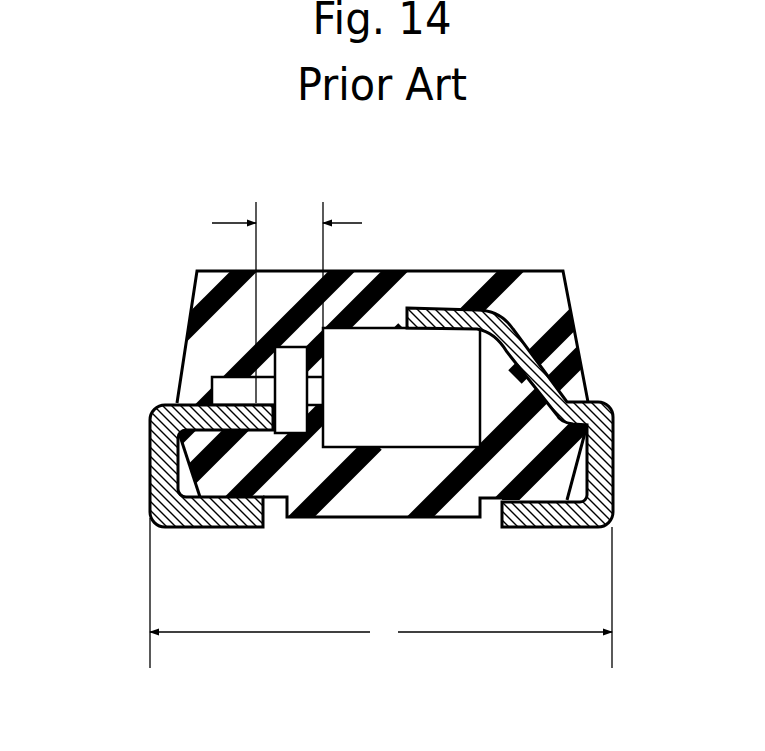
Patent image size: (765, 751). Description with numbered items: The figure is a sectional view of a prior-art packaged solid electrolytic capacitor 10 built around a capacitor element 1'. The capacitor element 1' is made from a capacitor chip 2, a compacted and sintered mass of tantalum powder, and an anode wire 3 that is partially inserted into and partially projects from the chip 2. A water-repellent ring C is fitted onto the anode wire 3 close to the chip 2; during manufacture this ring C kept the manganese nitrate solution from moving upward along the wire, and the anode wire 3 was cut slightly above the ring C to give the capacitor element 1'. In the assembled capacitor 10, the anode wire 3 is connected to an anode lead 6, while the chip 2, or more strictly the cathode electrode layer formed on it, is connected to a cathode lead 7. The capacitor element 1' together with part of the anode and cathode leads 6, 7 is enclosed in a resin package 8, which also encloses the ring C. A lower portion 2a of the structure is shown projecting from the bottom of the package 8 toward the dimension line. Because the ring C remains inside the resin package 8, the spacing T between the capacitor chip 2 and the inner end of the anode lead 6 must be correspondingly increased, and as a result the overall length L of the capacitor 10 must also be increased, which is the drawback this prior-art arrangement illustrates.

The packaged solid electrolytic capacitor 10 is at (514, 260).
The capacitor element 1' is at (423, 252).
The capacitor chip 2 is at (350, 347).
The contact tail 2a is at (300, 417).
The anode wire 3 is at (242, 392).
The anode lead 6 is at (152, 484).
The cathode lead 7 is at (615, 437).
The resin package 8 is at (547, 296).
The water-repellent ring C is at (282, 418).
The spacing T is at (265, 222).
The overall length L is at (381, 593).